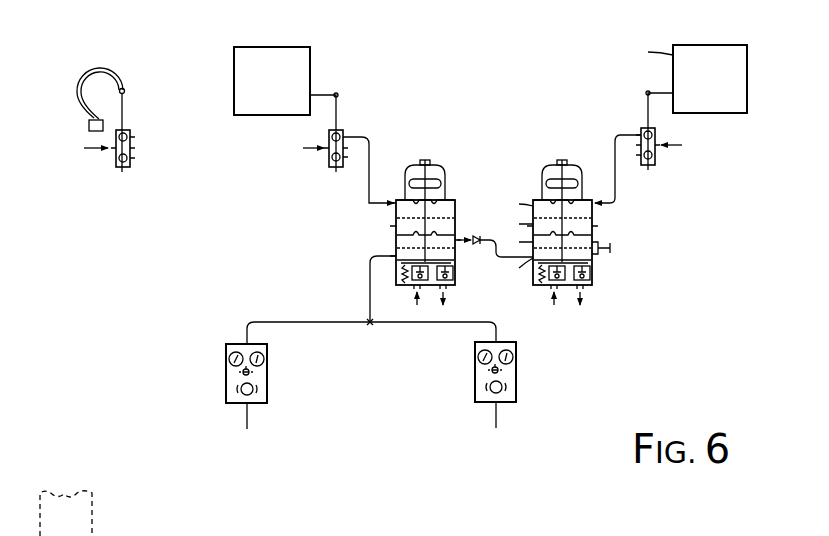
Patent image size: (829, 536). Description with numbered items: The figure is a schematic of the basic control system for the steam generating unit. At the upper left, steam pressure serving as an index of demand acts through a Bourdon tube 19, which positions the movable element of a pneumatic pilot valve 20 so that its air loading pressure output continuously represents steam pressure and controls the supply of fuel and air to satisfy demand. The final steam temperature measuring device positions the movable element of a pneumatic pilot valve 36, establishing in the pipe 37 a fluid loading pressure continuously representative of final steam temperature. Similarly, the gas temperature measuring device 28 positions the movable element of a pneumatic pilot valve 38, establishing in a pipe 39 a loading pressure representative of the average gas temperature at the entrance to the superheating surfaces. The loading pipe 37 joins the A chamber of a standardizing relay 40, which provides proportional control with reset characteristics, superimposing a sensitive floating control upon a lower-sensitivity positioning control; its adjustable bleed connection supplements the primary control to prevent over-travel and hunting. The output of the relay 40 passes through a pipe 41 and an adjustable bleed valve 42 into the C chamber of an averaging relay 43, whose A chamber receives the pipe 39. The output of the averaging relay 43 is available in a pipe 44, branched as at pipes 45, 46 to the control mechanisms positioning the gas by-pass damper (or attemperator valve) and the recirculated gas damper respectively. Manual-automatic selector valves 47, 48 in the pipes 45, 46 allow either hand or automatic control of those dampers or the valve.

The Bourdon tube 19 is at (80, 107).
The pneumatic pilot valve 20 is at (131, 131).
The gas temperature measuring device 28 is at (310, 58).
The pneumatic pilot valve 36 is at (656, 160).
The pipe 37 is at (615, 142).
The pneumatic pilot valve 38 is at (329, 162).
The pipe 39 is at (369, 152).
The standardizing relay 40 is at (552, 167).
The pipe 41 is at (494, 262).
The adjustable bleed valve 42 is at (478, 238).
The averaging relay 43 is at (441, 170).
The pipe 44 is at (369, 289).
The pipe branch 45 is at (445, 322).
The pipe branch 46 is at (262, 322).
The manual-automatic selector valve 47 is at (516, 364).
The manual-automatic selector valve 48 is at (226, 363).